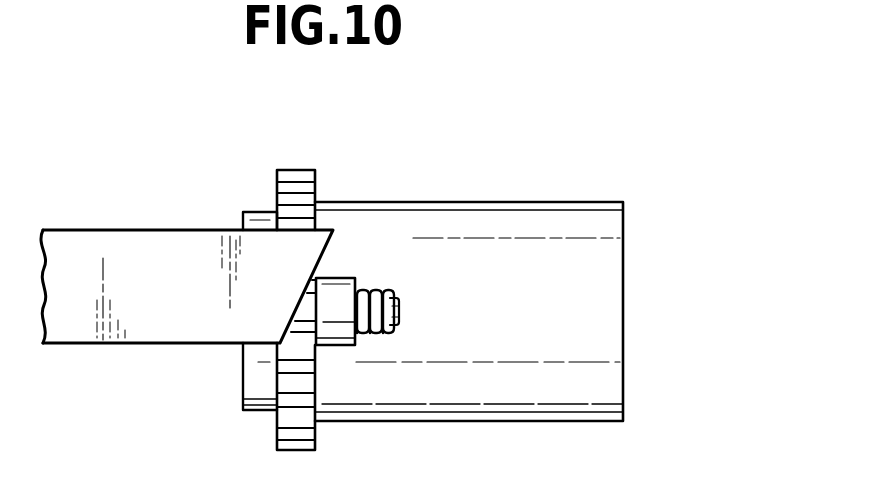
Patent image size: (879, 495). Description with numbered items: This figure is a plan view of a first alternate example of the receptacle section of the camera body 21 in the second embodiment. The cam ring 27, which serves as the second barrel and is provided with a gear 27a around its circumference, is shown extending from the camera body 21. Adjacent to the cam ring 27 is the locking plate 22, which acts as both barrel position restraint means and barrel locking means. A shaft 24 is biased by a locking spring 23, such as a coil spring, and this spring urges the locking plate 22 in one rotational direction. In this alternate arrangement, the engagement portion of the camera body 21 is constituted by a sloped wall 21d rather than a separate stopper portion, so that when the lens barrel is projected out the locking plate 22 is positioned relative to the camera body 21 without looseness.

The camera body 21 is at (170, 242).
The sloped wall 21d is at (300, 306).
The locking plate 22 is at (339, 340).
The locking spring 23 is at (375, 288).
The shaft 24 is at (398, 312).
The cam ring 27 is at (515, 223).
The gear 27a is at (295, 169).